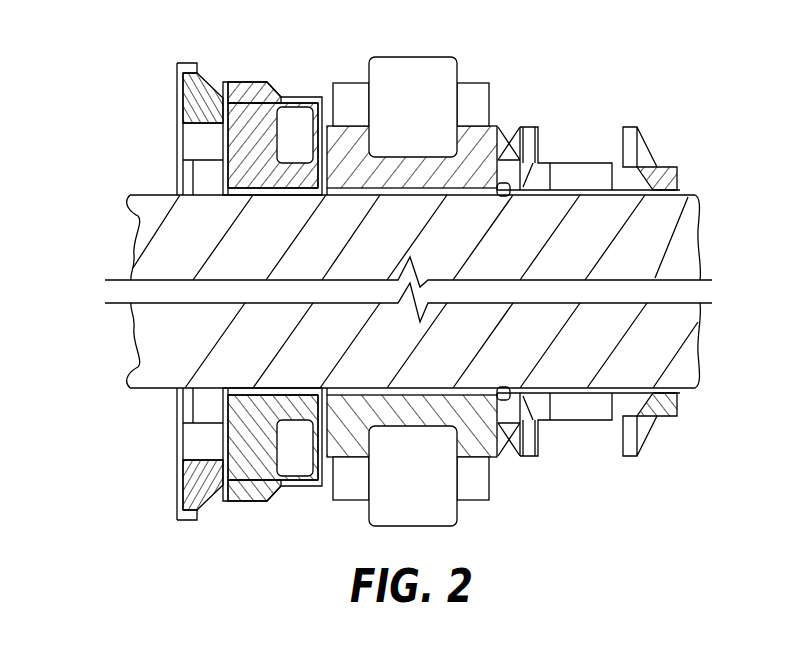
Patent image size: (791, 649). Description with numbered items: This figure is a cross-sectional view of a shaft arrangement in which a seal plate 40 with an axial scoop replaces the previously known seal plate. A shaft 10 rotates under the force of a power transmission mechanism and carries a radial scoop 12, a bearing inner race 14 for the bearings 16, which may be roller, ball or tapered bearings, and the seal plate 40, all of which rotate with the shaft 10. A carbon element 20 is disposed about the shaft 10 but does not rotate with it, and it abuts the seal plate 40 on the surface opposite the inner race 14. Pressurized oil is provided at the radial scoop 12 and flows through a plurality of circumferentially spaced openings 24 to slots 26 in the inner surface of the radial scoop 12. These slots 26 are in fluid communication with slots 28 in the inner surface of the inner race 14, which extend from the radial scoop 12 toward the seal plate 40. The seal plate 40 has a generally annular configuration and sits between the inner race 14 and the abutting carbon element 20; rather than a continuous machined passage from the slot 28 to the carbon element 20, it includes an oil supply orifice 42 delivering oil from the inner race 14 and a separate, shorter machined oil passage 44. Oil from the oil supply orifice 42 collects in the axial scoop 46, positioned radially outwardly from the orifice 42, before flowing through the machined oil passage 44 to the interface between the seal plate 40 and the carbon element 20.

The shaft 10 is at (160, 247).
The radial scoop 12 is at (652, 177).
The bearing inner race 14 is at (484, 190).
The bearings 16 is at (428, 92).
The carbon element 20 is at (176, 108).
The circumferentially spaced openings 24 is at (585, 177).
The slots in inner surface of radial scoop 26 is at (640, 170).
The slots in inner surface of inner race 28 is at (507, 135).
The seal plate 40 is at (257, 82).
The oil supply orifice 42 is at (227, 187).
The machined oil passage 44 is at (243, 97).
The axial scoop 46 is at (300, 97).